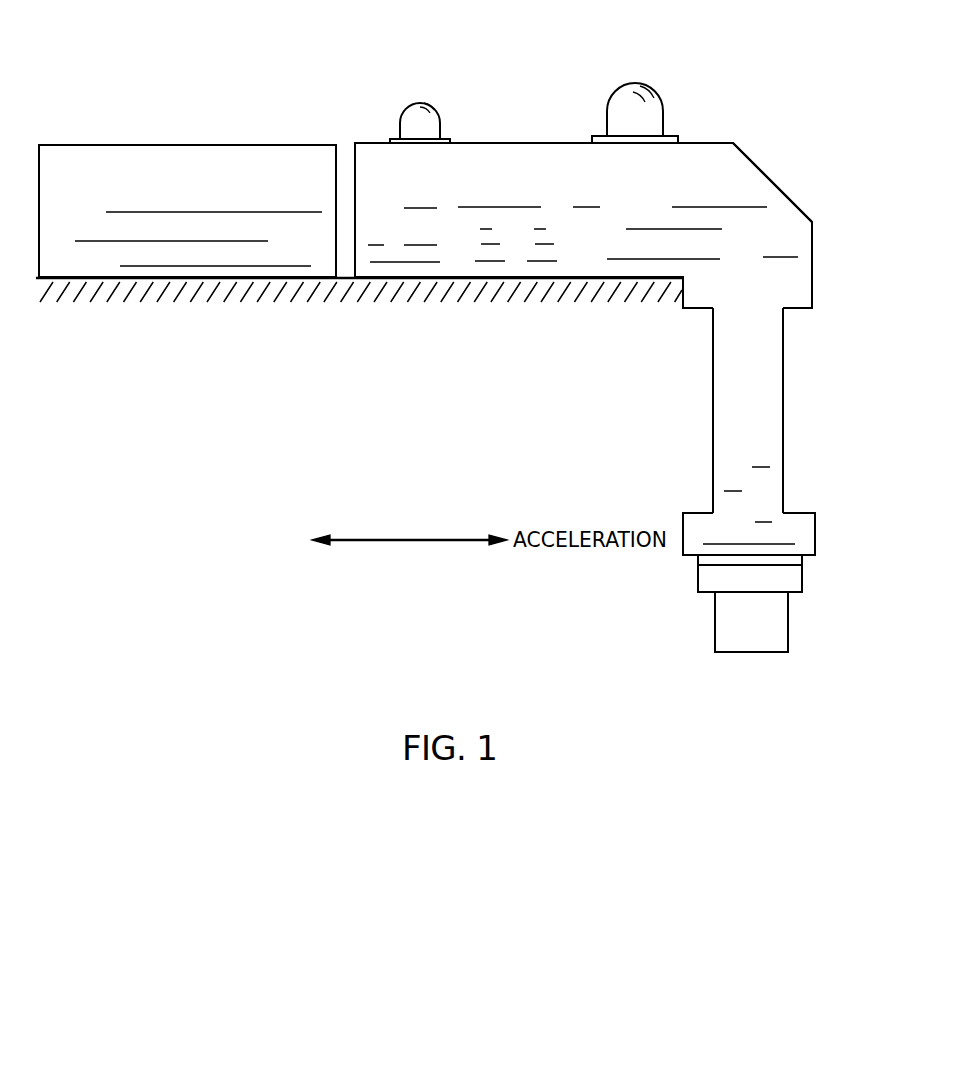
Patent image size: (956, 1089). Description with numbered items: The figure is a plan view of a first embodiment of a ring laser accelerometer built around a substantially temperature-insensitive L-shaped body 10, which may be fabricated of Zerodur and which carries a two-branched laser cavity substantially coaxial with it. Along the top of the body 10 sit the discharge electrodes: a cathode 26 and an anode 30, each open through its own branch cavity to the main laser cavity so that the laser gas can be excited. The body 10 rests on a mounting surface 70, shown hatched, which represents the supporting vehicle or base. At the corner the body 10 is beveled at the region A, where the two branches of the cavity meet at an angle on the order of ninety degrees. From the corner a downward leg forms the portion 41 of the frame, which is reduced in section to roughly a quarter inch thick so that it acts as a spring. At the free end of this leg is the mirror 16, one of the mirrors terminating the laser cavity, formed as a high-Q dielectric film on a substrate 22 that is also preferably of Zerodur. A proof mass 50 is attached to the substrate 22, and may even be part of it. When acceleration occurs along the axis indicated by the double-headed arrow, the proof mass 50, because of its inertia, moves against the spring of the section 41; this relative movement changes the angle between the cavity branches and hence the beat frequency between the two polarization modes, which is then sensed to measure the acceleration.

The L-shaped body 10 is at (764, 110).
The cathode 26 is at (634, 82).
The anode 30 is at (404, 113).
The beveled corner A is at (748, 208).
The base / mounting surface 70 is at (417, 298).
The reduced-section portion of the frame 41 is at (785, 383).
The mirror 16 is at (713, 560).
The substrate 22 is at (790, 575).
The proof mass 50 is at (763, 632).